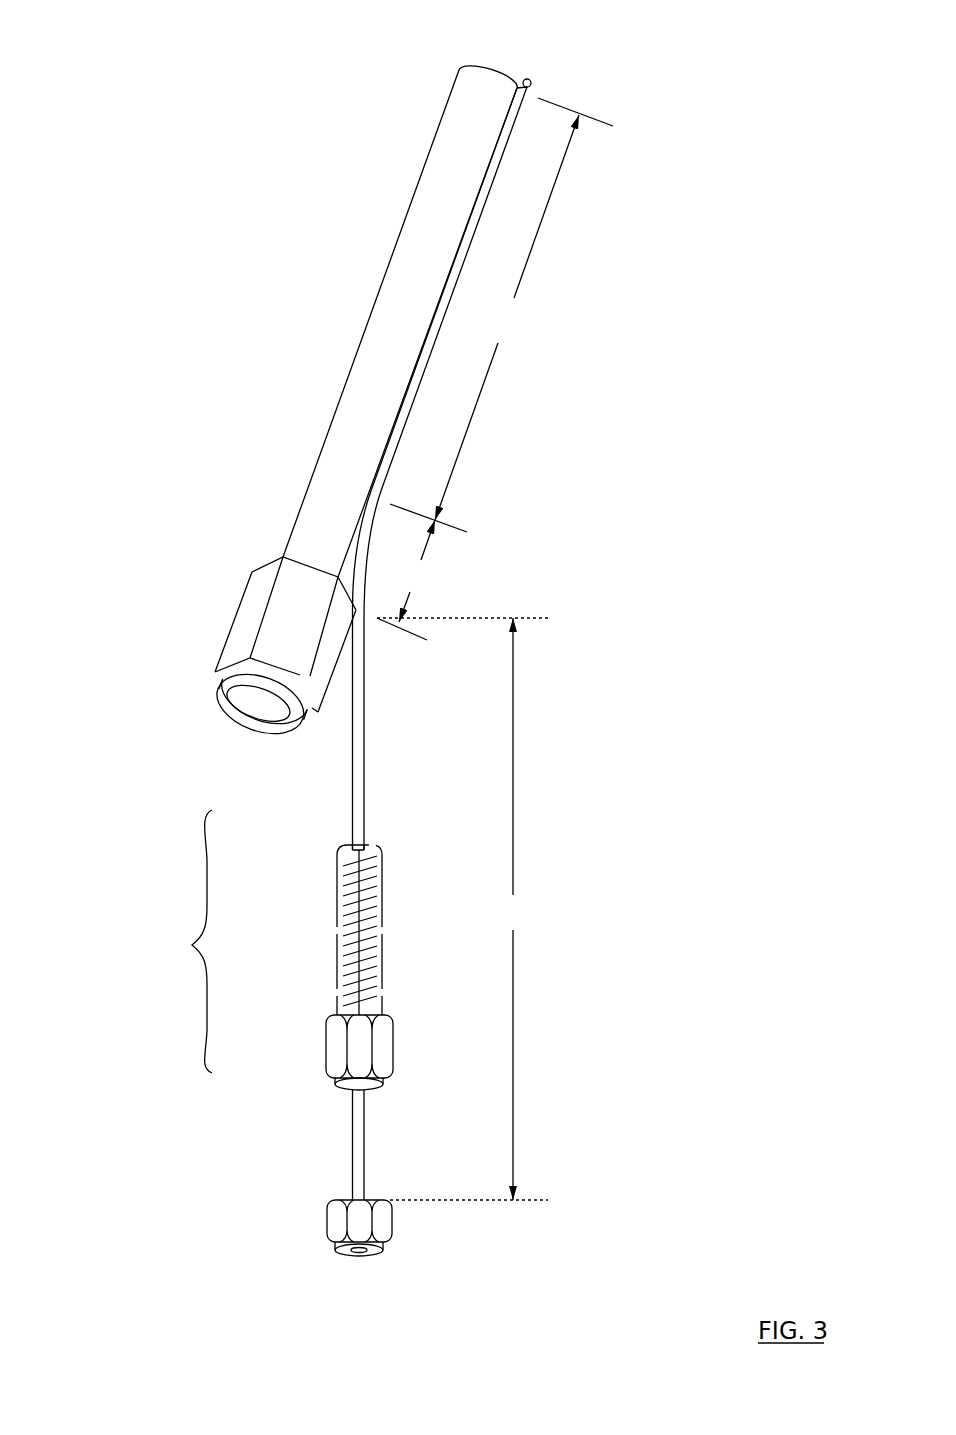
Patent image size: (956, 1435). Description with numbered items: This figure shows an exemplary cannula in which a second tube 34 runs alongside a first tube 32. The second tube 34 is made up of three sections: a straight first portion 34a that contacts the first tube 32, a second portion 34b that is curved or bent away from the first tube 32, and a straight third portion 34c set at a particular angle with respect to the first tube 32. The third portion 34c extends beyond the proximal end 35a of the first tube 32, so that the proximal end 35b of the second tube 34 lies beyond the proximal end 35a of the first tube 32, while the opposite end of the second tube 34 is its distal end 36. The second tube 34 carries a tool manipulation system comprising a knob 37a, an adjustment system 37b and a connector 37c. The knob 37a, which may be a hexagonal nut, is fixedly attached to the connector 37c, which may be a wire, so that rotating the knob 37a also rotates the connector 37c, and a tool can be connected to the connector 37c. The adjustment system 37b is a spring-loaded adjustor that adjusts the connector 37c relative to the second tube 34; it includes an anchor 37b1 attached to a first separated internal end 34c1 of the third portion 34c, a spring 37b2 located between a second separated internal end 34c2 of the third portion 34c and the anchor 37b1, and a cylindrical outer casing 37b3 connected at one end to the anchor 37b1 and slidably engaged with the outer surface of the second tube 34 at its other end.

The first tube 32 is at (422, 172).
The second tube 34 is at (350, 735).
The first portion 34a is at (501, 315).
The second portion 34b is at (409, 580).
The third portion 34c is at (462, 909).
The first separated internal end 34c1 is at (367, 1092).
The second separated internal end 34c2 is at (362, 847).
The proximal end of the first tube 35a is at (225, 728).
The proximal end of the second tube 35b is at (367, 1285).
The distal end of the second tube 36 is at (508, 62).
The knob 37a is at (325, 1222).
The adjustment system 37b is at (317, 929).
The anchor 37b1 is at (323, 1018).
The spring 37b2 is at (343, 952).
The cylindrical outer casing 37b3 is at (337, 844).
The connector 37c is at (365, 930).